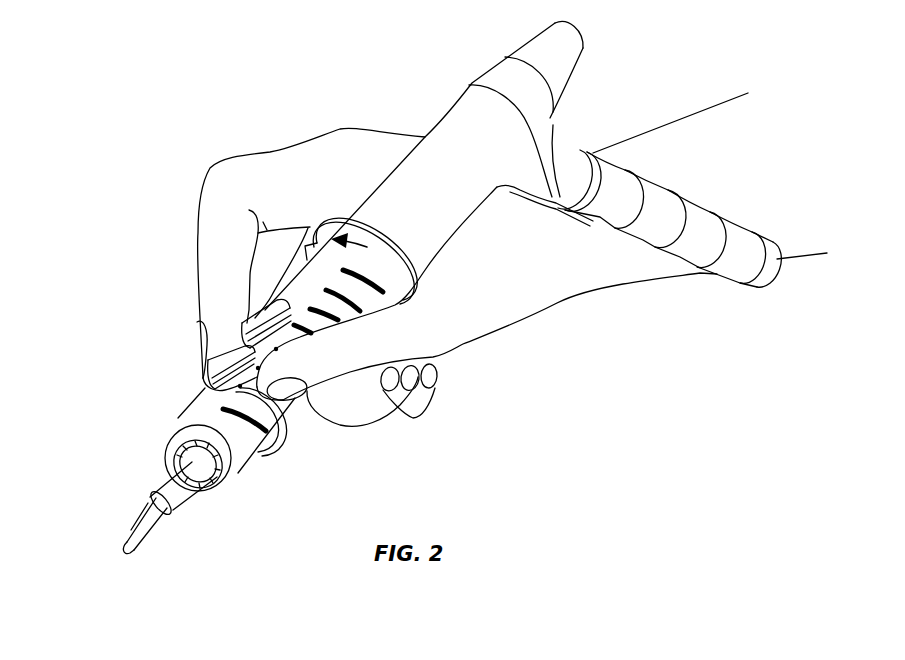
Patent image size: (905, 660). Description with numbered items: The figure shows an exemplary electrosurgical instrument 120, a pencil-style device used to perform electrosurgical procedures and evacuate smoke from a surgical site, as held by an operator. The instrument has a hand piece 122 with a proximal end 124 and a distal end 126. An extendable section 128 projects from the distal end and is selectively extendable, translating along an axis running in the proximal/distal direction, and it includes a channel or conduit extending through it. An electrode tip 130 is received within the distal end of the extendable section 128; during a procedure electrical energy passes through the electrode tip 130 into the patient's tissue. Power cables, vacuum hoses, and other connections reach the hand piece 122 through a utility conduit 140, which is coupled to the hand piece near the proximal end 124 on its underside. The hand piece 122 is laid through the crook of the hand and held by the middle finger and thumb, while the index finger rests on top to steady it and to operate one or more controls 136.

The electrosurgical instrument 120 is at (472, 59).
The hand piece 122 is at (420, 188).
The proximal end 124 is at (572, 58).
The distal end 126 is at (185, 404).
The extendable section 128 is at (168, 483).
The electrode tip 130 is at (128, 534).
The controls 136 is at (203, 380).
The utility conduit 140 is at (731, 273).